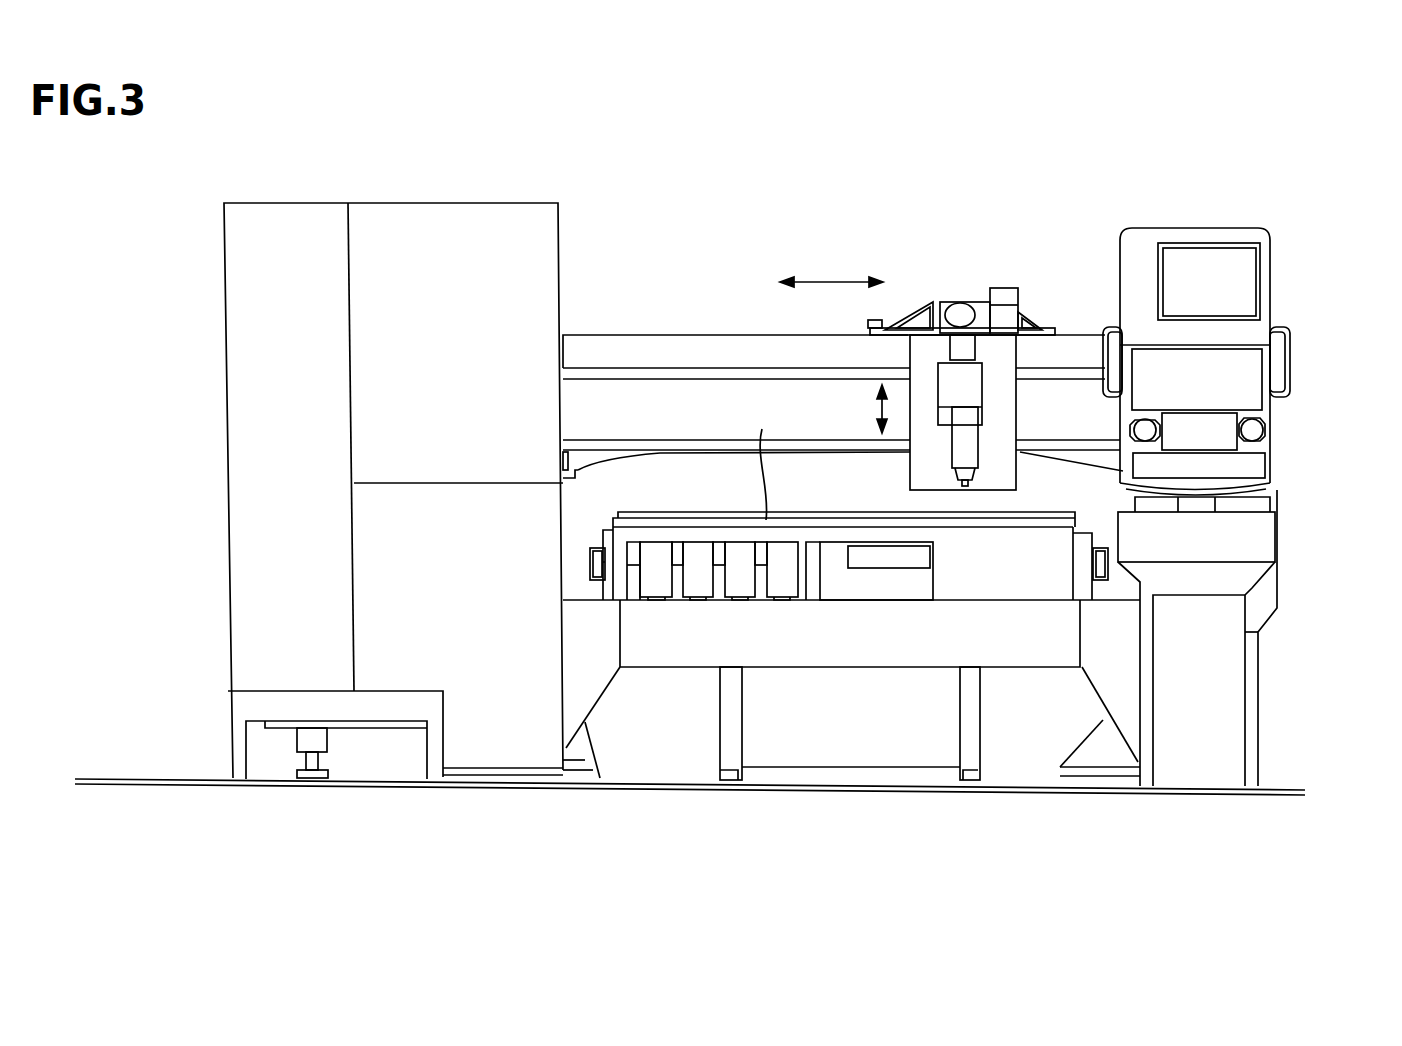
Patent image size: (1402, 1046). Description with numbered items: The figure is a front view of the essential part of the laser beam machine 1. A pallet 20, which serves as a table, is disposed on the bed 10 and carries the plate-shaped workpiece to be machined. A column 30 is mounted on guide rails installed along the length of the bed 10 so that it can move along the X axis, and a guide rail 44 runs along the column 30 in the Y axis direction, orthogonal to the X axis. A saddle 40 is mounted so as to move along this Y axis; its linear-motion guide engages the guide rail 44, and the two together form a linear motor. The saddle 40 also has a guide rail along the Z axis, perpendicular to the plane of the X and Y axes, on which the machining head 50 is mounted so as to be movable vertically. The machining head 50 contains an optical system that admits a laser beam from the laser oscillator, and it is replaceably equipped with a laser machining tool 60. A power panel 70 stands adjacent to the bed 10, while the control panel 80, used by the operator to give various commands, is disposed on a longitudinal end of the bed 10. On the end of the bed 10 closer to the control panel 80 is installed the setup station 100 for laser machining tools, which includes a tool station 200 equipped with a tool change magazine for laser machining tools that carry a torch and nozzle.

The laser beam machine 1 is at (913, 228).
The bed 10 is at (1258, 698).
The pallet 20 is at (1080, 557).
The column 30 is at (742, 360).
The saddle 40 is at (938, 301).
The guide rail 44 is at (645, 378).
The machining head 50 is at (965, 387).
The laser machining tool 60 is at (967, 445).
The power panel 70 is at (393, 491).
The control panel 80 is at (1258, 327).
The setup station 100 is at (1000, 590).
The tool station 200 is at (684, 640).